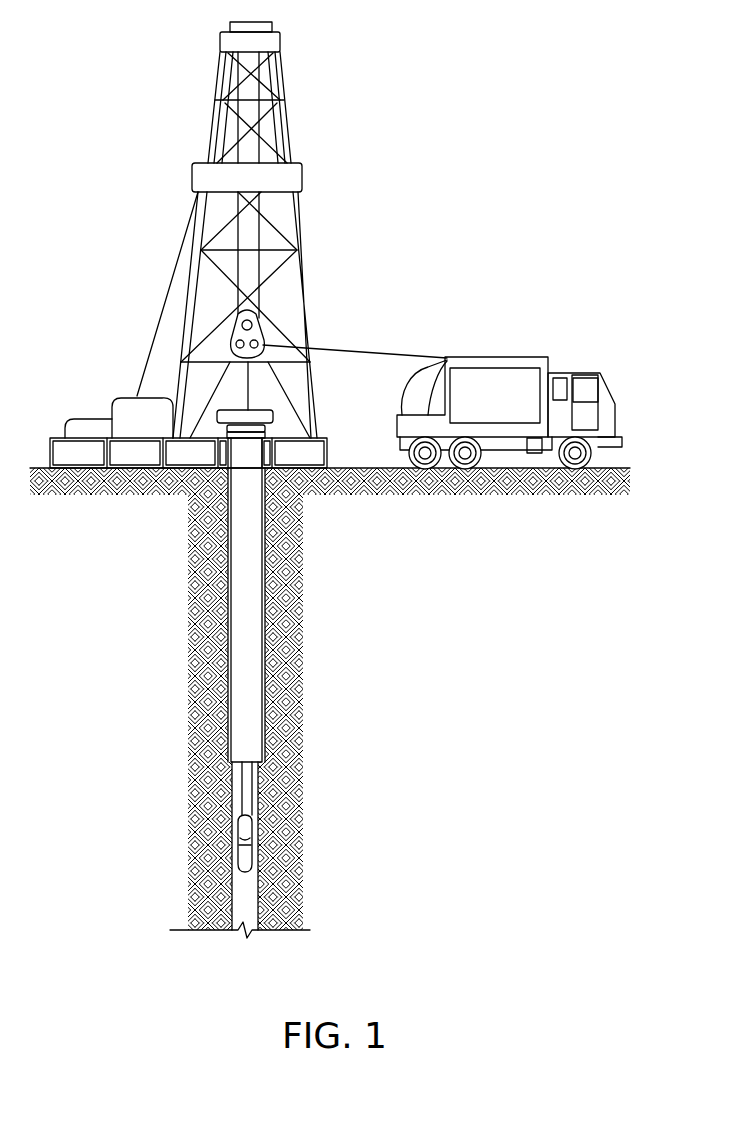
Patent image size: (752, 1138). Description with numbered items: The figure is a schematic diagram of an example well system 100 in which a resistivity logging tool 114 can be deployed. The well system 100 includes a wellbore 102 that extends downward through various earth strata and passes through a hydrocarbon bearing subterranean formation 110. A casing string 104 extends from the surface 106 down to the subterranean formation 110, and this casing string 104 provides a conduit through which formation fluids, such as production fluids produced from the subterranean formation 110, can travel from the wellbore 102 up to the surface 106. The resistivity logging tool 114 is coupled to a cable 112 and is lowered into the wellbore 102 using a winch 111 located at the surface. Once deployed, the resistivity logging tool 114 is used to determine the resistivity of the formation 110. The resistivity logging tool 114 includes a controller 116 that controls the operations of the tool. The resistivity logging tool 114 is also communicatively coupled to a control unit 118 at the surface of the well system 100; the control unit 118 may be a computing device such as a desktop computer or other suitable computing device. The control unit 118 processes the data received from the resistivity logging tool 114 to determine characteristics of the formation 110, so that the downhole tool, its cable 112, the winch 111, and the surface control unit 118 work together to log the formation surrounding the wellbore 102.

The well system 100 is at (330, 480).
The wellbore 102 is at (262, 677).
The casing string 104 is at (233, 688).
The surface 106 is at (275, 412).
The subterranean formation 110 is at (312, 587).
The winch 111 is at (258, 316).
The cable 112 is at (340, 348).
The resistivity logging tool 114 is at (249, 816).
The controller 116 is at (247, 839).
The control unit 118 is at (527, 418).